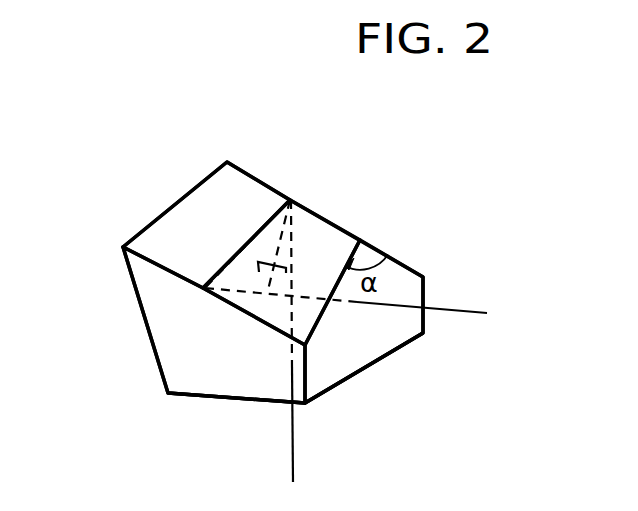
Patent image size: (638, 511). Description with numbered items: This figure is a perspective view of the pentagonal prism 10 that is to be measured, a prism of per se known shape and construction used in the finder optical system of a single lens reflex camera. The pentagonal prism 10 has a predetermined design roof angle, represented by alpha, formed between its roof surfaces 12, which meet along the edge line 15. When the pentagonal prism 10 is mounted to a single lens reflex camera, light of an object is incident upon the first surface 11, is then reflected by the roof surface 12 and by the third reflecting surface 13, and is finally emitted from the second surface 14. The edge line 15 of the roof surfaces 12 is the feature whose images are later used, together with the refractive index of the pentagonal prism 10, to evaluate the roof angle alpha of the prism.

The pentagonal prism 10 is at (437, 197).
The first surface 11 is at (238, 401).
The roof surface 12 is at (188, 208).
The third reflecting surface 13 is at (142, 316).
The second surface 14 is at (353, 366).
The edge line 15 is at (321, 209).